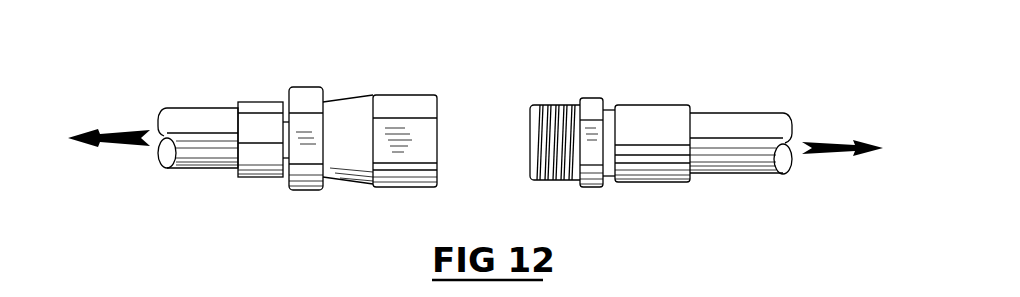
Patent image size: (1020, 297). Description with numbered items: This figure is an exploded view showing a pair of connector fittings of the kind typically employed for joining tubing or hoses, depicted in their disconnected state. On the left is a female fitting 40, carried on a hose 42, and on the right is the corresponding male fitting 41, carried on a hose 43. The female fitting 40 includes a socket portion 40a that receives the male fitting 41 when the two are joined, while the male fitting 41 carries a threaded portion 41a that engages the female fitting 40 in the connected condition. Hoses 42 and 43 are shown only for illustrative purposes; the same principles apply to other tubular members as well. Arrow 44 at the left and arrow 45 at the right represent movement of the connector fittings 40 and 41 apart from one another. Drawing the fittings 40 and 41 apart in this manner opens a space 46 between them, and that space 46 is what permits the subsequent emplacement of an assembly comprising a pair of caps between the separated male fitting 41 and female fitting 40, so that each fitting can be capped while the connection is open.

The female fitting 40 is at (346, 97).
The socket body 40a is at (423, 97).
The male fitting 41 is at (570, 157).
The threaded portion 41a is at (538, 105).
The hose 42 is at (193, 108).
The hose 43 is at (712, 113).
The arrow 44 is at (95, 137).
The arrow 45 is at (859, 147).
The space 46 is at (490, 150).